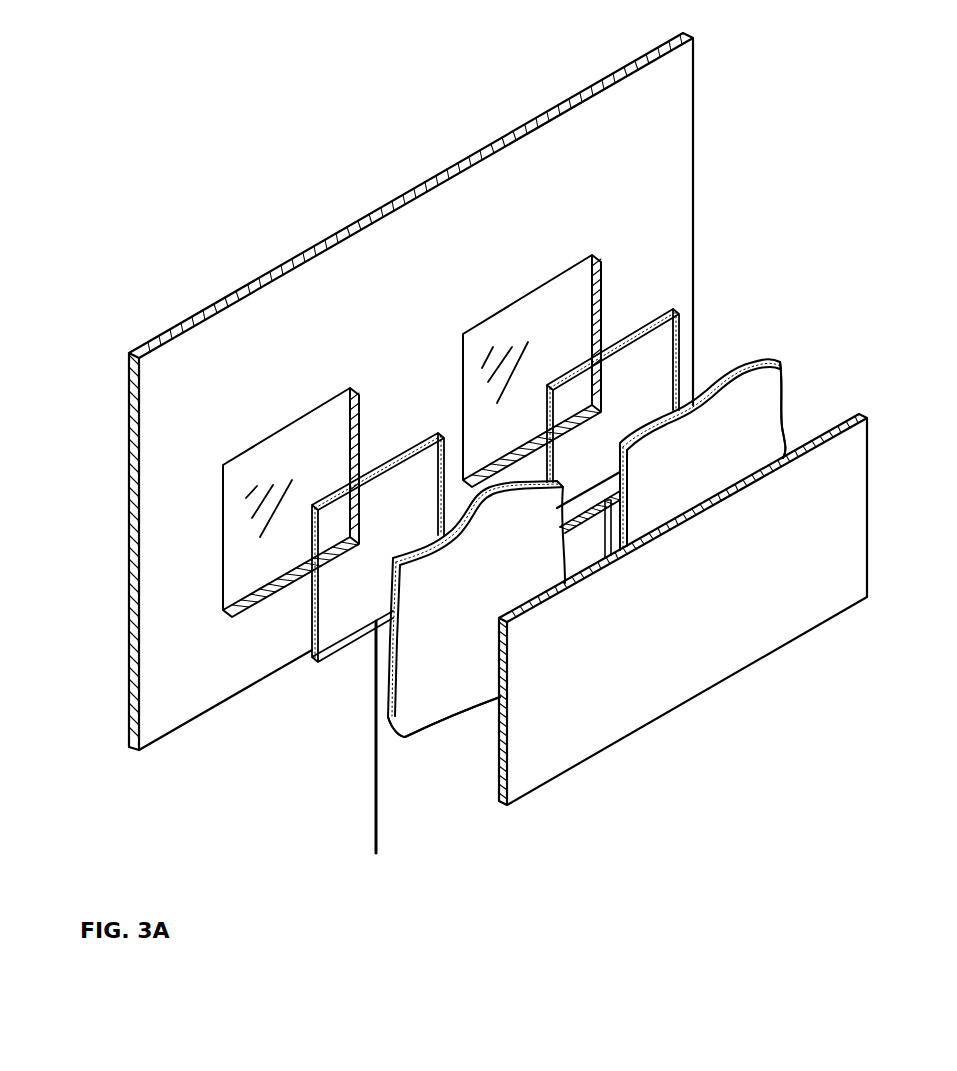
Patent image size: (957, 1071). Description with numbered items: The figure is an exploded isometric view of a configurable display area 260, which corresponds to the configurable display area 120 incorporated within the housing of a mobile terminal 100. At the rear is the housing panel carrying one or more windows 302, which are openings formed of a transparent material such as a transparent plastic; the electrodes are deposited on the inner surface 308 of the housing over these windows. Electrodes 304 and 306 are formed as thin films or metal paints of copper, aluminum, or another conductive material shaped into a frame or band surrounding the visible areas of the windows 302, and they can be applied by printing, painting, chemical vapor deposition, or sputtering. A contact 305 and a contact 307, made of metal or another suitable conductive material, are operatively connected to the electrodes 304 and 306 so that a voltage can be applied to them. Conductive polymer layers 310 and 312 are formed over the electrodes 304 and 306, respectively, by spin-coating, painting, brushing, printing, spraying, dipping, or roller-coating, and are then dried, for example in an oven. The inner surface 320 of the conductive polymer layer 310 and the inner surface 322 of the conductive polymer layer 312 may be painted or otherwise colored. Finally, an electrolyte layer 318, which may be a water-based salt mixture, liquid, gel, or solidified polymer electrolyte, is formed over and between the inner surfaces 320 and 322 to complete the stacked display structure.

The mobile terminal 100 is at (249, 778).
The configurable display area 120 is at (568, 182).
The configurable display area 260 is at (800, 232).
The windows 302 is at (253, 547).
The electrode 304 is at (313, 630).
The contact 305 is at (376, 803).
The electrode 306 is at (682, 385).
The contact 307 is at (605, 528).
The inner surface 308 is at (414, 418).
The conductive polymer layer 310 is at (463, 691).
The conductive polymer layer 312 is at (785, 410).
The electrolyte layer 318 is at (683, 609).
The inner surface 320 is at (476, 609).
The inner surface 322 is at (702, 454).